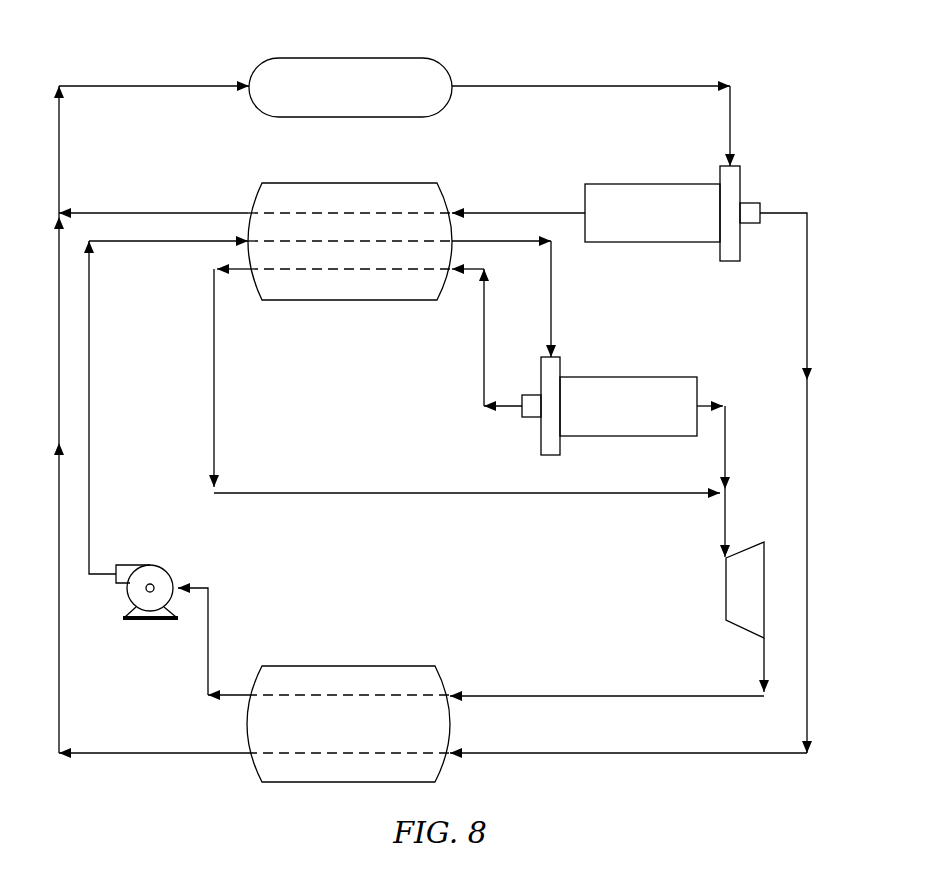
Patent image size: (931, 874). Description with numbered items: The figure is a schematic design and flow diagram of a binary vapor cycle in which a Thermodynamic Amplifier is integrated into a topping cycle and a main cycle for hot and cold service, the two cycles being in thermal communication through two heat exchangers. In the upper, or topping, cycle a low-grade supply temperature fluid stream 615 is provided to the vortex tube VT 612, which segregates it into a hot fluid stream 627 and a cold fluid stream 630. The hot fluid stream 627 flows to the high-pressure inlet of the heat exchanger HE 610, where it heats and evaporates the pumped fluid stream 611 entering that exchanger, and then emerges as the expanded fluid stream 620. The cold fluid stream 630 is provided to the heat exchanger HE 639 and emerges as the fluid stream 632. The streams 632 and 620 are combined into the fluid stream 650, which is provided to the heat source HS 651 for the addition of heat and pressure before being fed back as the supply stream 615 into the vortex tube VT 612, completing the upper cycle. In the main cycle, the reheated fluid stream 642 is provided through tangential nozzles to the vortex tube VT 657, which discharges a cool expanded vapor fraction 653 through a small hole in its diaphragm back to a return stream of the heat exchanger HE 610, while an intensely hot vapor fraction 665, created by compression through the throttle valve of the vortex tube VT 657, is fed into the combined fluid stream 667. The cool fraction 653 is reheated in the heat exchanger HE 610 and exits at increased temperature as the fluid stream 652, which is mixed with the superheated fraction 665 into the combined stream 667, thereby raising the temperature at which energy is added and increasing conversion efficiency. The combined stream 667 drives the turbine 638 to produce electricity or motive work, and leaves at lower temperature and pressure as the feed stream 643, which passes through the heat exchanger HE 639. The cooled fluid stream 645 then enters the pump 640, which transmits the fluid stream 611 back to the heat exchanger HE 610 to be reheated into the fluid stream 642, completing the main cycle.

The heat exchanger HE 610 is at (350, 182).
The fluid stream T8 611 is at (90, 445).
The vortex tube VT 612 is at (662, 183).
The fluid stream To 615 is at (603, 85).
The expanded fluid stream TE 620 is at (217, 212).
The hot fluid stream TH 627 is at (541, 212).
The cold fluid stream TC 630 is at (780, 755).
The fluid stream TA 632 is at (100, 755).
The turbine 638 is at (725, 591).
The heat exchanger HE 639 is at (350, 665).
The pump 640 is at (142, 564).
The fluid stream T1 642 is at (553, 322).
The feed stream T6 643 is at (662, 695).
The fluid stream T7 645 is at (207, 656).
The fluid stream TB 650 is at (218, 85).
The heat source HS 651 is at (350, 57).
The fluid stream T4 652 is at (215, 427).
The cool expanded vapor stream T2 653 is at (483, 349).
The vortex tube VT 657 is at (648, 376).
The intensely hot vapor stream T3 665 is at (727, 456).
The fluid stream T5 667 is at (724, 511).